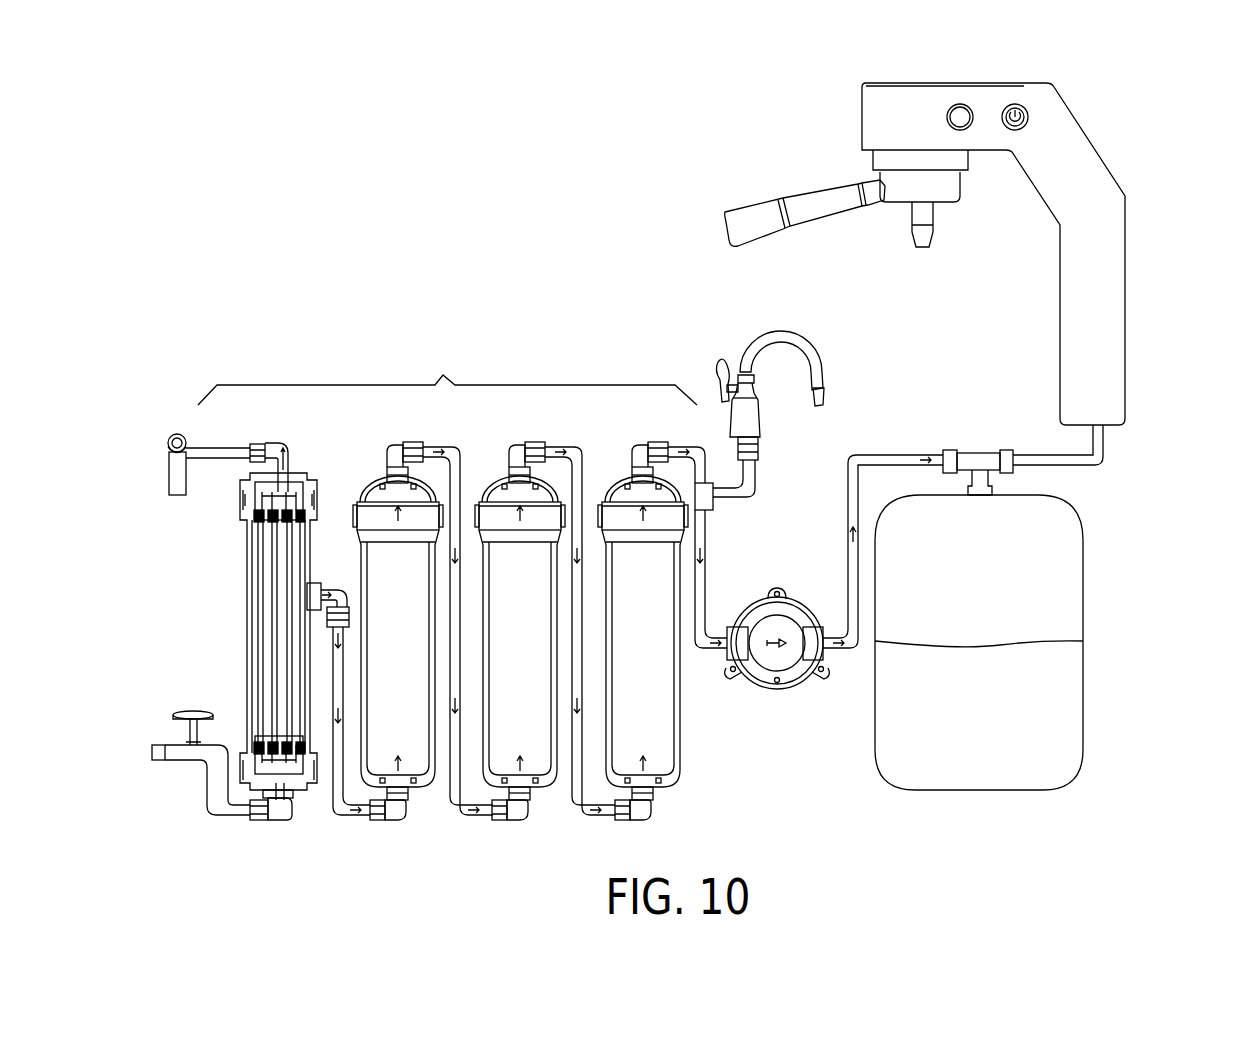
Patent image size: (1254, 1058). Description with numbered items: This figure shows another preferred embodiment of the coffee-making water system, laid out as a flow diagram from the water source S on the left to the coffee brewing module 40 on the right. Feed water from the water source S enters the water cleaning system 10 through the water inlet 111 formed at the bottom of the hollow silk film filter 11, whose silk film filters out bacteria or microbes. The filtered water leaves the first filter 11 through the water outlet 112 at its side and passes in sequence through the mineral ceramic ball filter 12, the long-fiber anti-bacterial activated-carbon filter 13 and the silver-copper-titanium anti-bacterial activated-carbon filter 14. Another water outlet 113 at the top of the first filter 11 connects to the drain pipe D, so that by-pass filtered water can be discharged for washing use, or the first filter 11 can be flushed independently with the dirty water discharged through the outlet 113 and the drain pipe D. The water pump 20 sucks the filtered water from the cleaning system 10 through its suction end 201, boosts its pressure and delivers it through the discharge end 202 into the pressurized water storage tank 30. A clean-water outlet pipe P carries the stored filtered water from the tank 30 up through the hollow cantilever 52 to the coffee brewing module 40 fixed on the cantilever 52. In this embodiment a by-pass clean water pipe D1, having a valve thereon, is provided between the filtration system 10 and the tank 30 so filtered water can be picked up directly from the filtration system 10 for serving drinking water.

The water cleaning system 10 is at (447, 370).
The hollow silk film filter 11 is at (240, 557).
The water inlet 111 is at (284, 803).
The water outlet 112 is at (313, 589).
The water outlet 113 is at (290, 443).
The mineral ceramic ball filter 12 is at (378, 653).
The long-fiber anti-bacterial activated-carbon filter 13 is at (500, 653).
The silver-copper-titanium anti-bacterial activated-carbon filter 14 is at (623, 653).
The water pump 20 is at (778, 683).
The suction end 201 is at (712, 648).
The discharge end 202 is at (843, 648).
The pressurized water storage tank 30 is at (1068, 553).
The coffee brewing module 40 is at (898, 202).
The cantilever 52 is at (1088, 160).
The drain pipe D is at (170, 470).
The by-pass clean water pipe D1 is at (762, 332).
The clean-water outlet pipe P is at (1055, 447).
The water source S is at (195, 755).